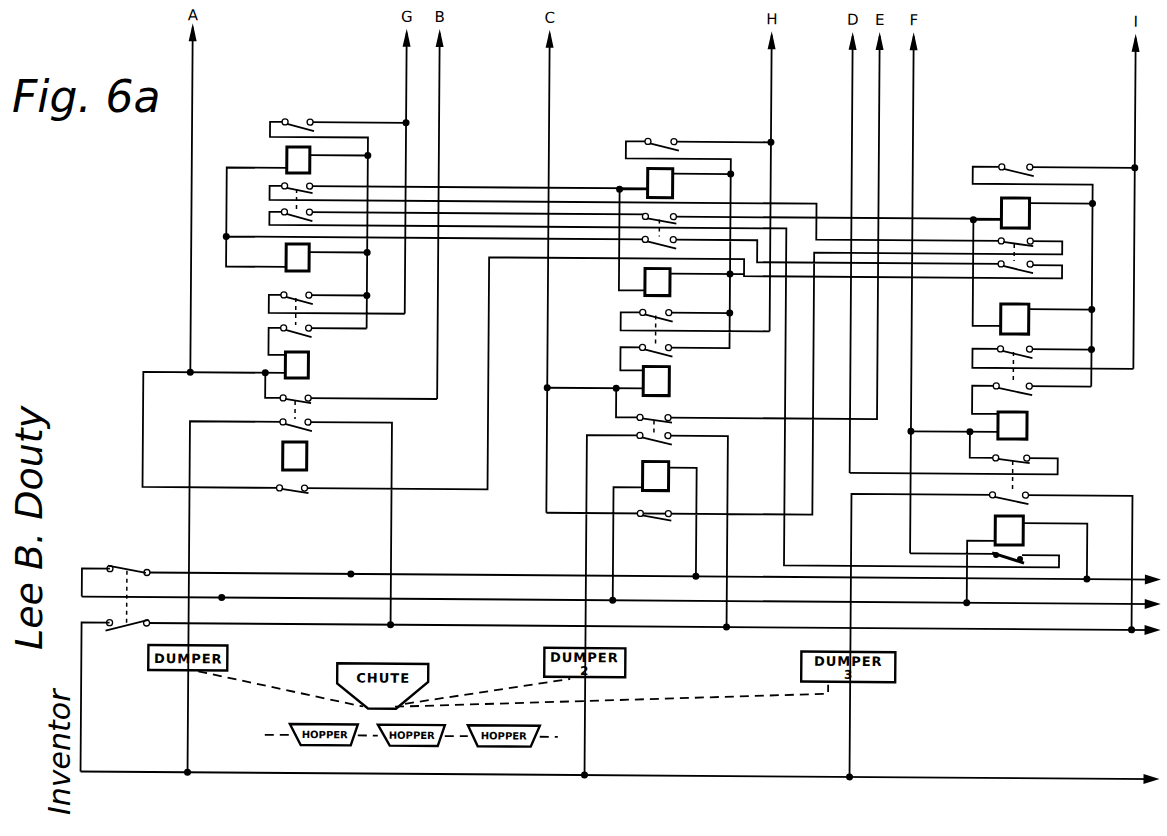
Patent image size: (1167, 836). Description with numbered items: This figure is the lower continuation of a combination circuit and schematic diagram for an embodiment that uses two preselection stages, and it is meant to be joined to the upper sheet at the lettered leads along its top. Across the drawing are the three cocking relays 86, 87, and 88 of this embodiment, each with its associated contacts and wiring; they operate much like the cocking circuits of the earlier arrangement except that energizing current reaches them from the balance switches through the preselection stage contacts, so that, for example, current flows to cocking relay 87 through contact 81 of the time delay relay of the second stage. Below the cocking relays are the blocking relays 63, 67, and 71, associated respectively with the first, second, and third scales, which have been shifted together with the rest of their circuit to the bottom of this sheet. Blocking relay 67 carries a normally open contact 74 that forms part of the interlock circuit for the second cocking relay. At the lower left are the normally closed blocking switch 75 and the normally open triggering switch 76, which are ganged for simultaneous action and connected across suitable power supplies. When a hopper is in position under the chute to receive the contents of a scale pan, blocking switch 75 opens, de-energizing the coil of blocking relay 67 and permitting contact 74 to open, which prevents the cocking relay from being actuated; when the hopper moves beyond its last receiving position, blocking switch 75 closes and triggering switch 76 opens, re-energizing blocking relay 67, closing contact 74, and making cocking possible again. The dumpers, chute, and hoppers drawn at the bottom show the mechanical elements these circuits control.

The cocking relay 86 is at (285, 158).
The contact 81 is at (661, 139).
The cocking relay 87 is at (646, 179).
The cocking relay 88 is at (1000, 209).
The blocking relay 63 is at (283, 452).
The blocking relay 67 is at (643, 473).
The normally open contact 74 is at (651, 517).
The blocking relay 71 is at (996, 527).
The blocking switch 75 is at (127, 572).
The triggering switch 76 is at (115, 696).